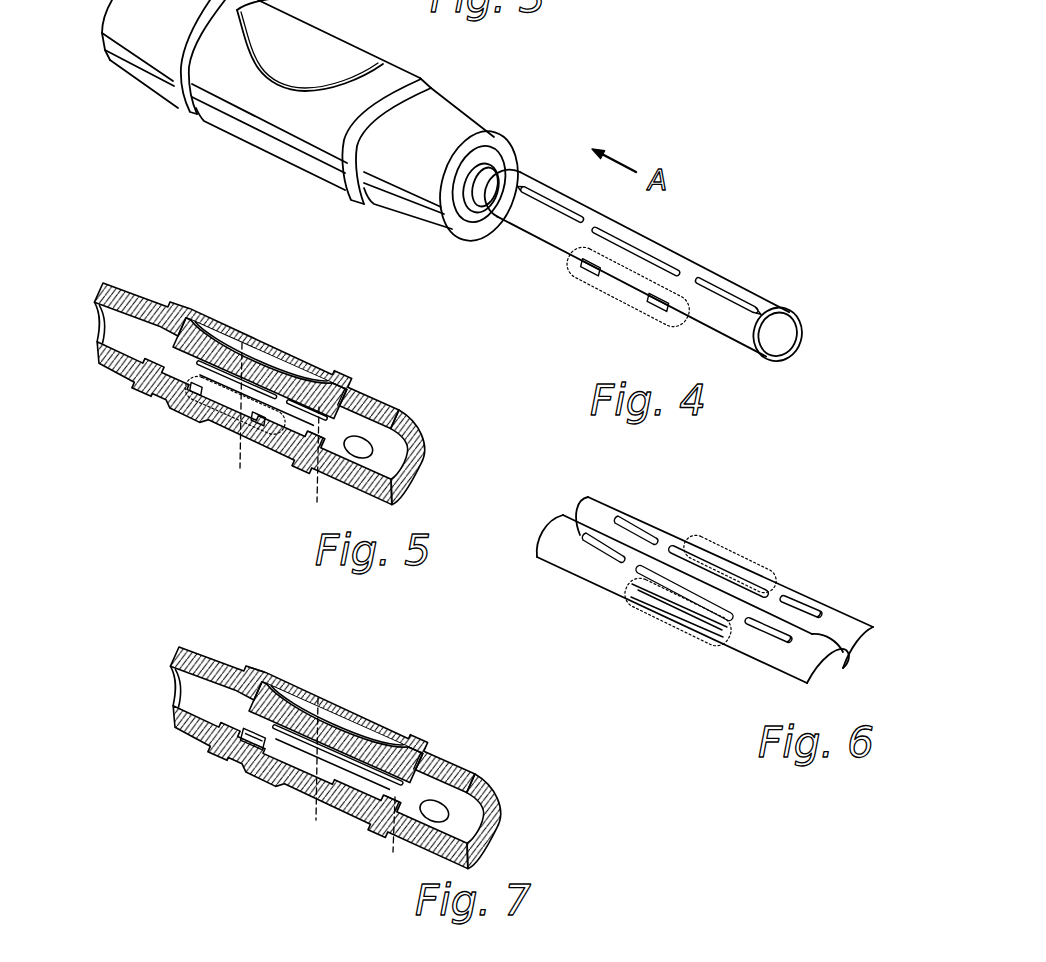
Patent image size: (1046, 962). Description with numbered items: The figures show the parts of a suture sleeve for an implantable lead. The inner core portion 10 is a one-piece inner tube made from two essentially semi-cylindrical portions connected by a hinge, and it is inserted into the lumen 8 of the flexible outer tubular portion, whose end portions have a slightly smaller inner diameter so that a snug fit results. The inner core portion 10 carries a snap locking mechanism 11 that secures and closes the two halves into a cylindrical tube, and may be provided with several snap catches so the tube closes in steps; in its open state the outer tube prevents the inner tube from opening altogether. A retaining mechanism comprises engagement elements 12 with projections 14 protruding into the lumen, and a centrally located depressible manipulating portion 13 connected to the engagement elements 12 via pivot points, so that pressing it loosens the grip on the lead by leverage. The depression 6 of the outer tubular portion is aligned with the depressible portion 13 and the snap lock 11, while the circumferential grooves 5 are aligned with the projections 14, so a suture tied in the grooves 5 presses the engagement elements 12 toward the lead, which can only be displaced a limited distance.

In FIG. 5, the circumferential grooves 5 is at (328, 385).
In FIG. 7, the circumferential grooves 5 is at (261, 673).
In FIG. 5, the depression 6 is at (266, 358).
In FIG. 7, the depression 6 is at (337, 717).
In FIG. 4, the lumen 8 is at (480, 183).
In FIG. 4, the inner core portion 10 is at (737, 250).
In FIG. 6, the inner core portion 10 is at (587, 597).
In FIG. 4, the snap locking mechanism 11 is at (592, 291).
In FIG. 5, the snap locking mechanism 11 is at (196, 415).
In FIG. 6, the snap locking mechanism 11 is at (745, 560).
In FIG. 4, the engagement elements 12 is at (735, 282).
In FIG. 5, the engagement elements 12 is at (285, 428).
In FIG. 6, the engagement elements 12 is at (603, 550).
In FIG. 7, the engagement elements 12 is at (272, 740).
In FIG. 4, the depressible manipulating portion 13 is at (650, 242).
In FIG. 5, the depressible manipulating portion 13 is at (185, 370).
In FIG. 6, the depressible manipulating portion 13 is at (683, 575).
In FIG. 7, the projections 14 is at (250, 733).